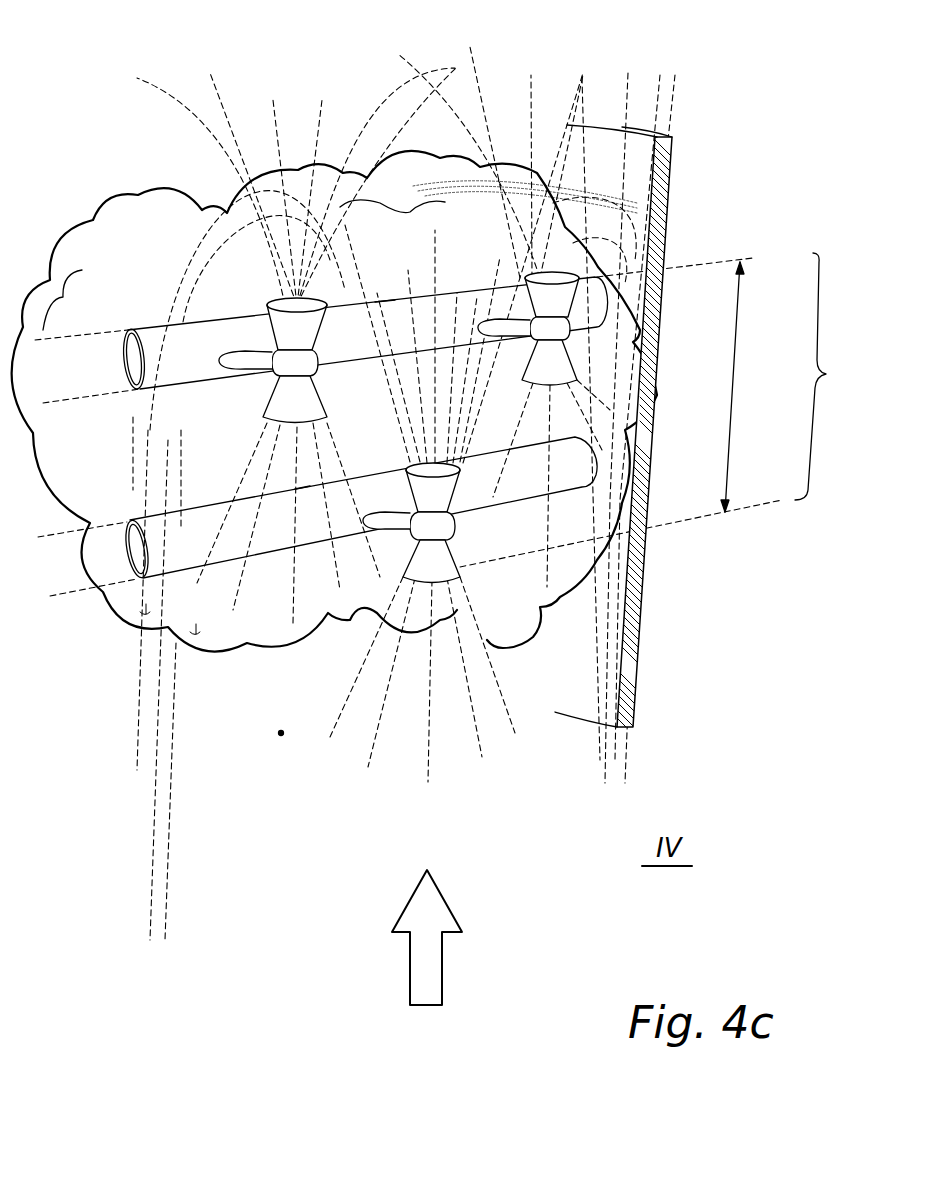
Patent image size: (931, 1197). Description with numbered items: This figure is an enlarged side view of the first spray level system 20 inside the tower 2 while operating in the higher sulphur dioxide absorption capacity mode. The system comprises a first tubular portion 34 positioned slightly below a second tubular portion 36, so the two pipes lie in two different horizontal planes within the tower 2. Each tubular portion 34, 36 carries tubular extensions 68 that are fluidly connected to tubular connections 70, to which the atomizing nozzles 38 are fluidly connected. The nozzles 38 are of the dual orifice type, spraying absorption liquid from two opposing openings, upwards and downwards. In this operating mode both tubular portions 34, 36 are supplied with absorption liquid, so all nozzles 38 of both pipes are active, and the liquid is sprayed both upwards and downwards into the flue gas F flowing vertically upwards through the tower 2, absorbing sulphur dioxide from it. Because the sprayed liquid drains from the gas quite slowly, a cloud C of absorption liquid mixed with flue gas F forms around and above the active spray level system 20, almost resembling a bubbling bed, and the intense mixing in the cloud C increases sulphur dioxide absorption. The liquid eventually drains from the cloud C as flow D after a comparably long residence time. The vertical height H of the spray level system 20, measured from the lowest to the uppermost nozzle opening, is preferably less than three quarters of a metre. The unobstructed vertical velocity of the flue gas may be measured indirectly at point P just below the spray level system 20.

The tower 2 is at (668, 197).
The first spray level system 20 is at (829, 376).
The first tubular portion 34 is at (227, 576).
The second tubular portion 36 is at (157, 322).
The atomizing nozzle 38 is at (325, 327).
The tubular extension 68 is at (385, 313).
The tubular connection 70 is at (245, 358).
The cloud C is at (128, 190).
The flow D is at (157, 738).
The vertical height H is at (721, 387).
The point P is at (281, 735).
The flue gas F is at (443, 957).